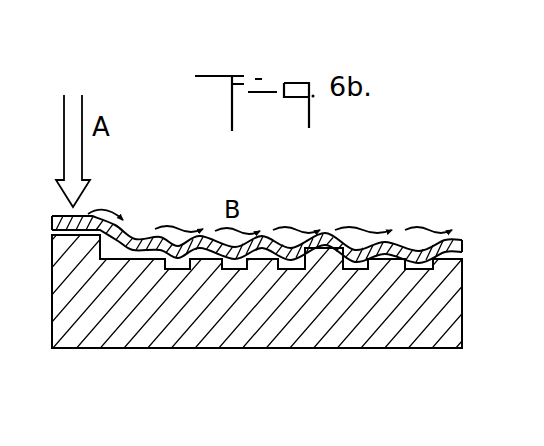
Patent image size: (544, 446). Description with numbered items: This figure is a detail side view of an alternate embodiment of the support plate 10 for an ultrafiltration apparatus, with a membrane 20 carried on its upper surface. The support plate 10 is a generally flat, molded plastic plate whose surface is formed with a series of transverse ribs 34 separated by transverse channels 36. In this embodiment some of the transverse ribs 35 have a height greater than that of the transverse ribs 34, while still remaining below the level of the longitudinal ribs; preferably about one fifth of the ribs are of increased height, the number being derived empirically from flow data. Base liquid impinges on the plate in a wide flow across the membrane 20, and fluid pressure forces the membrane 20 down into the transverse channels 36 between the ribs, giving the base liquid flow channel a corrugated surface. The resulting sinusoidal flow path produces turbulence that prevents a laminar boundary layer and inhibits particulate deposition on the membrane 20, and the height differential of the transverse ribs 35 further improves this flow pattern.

The support plate 10 is at (447, 318).
The membrane 20 is at (458, 243).
The transverse ribs 34 is at (200, 263).
The increased-height transverse ribs 35 is at (330, 260).
The transverse channels 36 is at (245, 268).